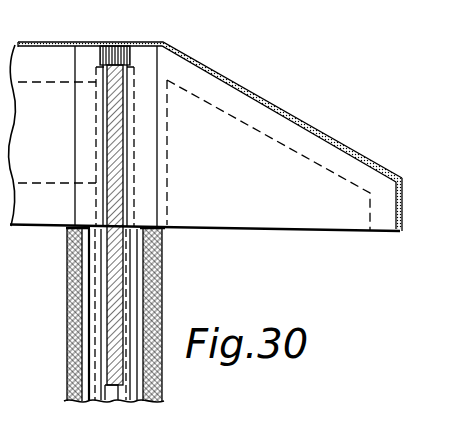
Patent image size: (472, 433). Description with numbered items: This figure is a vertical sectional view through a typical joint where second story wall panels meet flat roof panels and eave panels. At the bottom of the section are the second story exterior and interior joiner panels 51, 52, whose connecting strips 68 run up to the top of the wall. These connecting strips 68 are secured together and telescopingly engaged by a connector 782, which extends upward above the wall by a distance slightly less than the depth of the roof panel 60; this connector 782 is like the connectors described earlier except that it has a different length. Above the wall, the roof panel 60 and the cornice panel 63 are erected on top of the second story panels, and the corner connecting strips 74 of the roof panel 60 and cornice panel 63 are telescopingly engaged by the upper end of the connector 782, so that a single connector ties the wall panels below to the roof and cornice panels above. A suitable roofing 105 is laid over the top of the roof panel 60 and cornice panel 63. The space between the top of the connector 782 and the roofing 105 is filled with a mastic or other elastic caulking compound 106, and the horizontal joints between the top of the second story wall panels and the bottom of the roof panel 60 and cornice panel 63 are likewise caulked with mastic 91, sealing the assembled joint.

The roof panel 60 is at (57, 57).
The cornice panel 63 is at (197, 82).
The roofing 105 is at (278, 111).
The mastic caulking 106 is at (120, 45).
The corner connecting strip 74 is at (85, 135).
The connector 782 is at (120, 190).
The mastic caulking 91 is at (68, 229).
The interior joiner panel 52 is at (68, 304).
The exterior joiner panel 51 is at (150, 296).
The connecting strip 68 is at (105, 356).